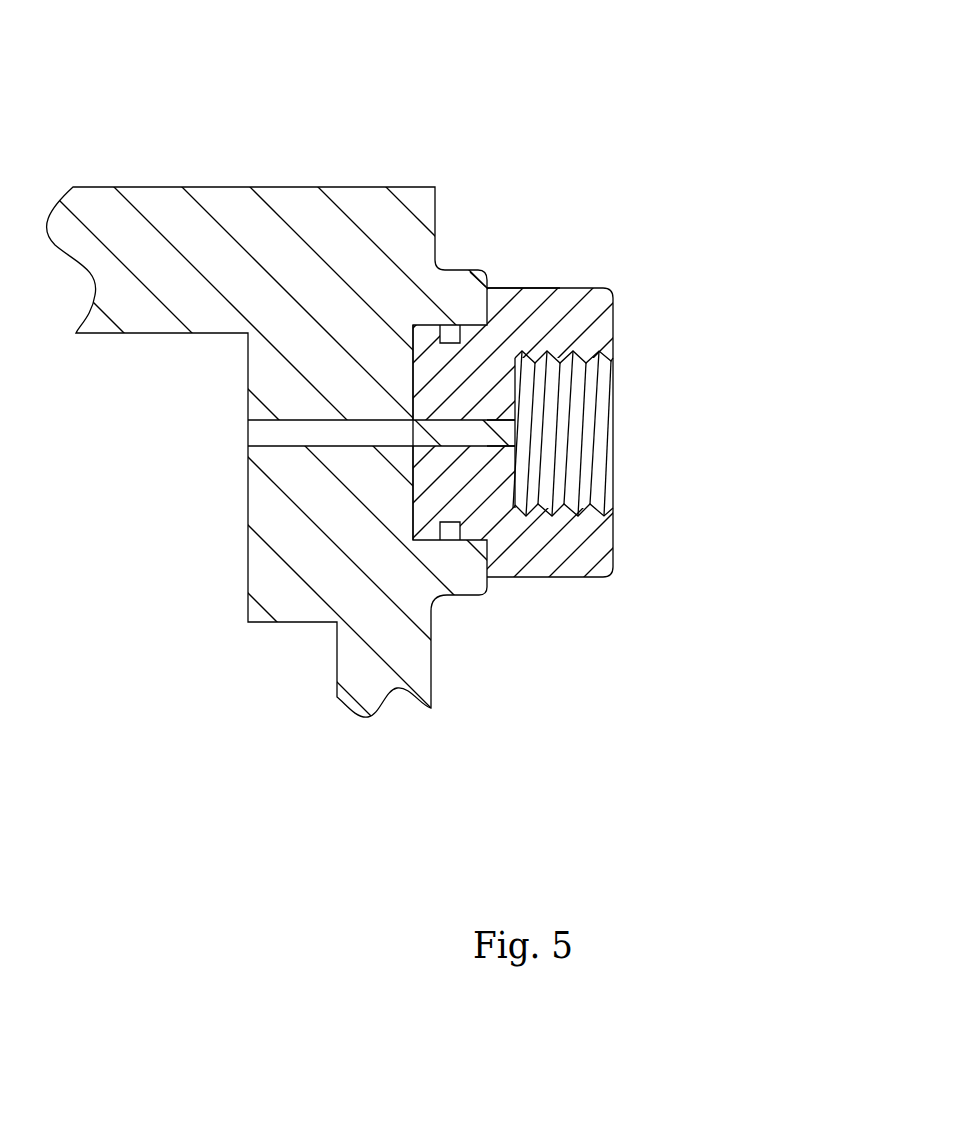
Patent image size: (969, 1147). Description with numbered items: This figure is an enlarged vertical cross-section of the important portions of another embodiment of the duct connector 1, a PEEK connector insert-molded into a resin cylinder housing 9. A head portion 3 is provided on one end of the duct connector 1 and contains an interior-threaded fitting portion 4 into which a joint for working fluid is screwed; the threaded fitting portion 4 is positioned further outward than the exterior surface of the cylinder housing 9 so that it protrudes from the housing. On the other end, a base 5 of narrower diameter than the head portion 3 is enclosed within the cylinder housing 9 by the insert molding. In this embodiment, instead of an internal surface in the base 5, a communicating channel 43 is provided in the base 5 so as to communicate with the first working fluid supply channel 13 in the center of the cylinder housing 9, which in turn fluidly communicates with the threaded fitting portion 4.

The cylinder housing 9 is at (277, 252).
The base 5 is at (452, 382).
The duct connector 1 is at (515, 287).
The head portion 3 is at (552, 317).
The threaded fitting portion 4 is at (570, 363).
The communicating channel 43 is at (481, 440).
The first working fluid supply channel 13 is at (338, 430).